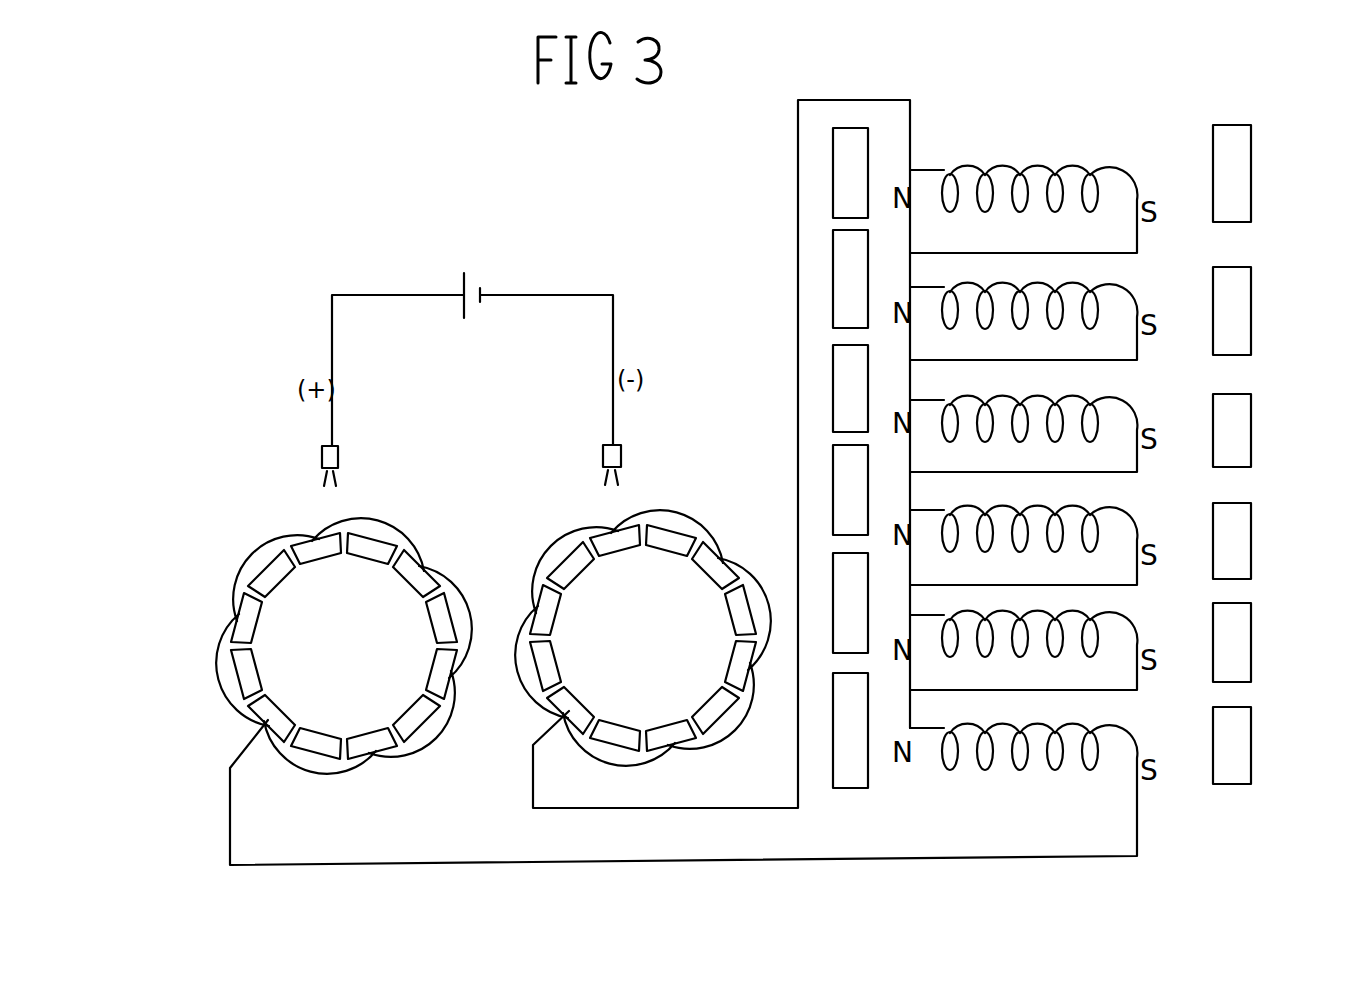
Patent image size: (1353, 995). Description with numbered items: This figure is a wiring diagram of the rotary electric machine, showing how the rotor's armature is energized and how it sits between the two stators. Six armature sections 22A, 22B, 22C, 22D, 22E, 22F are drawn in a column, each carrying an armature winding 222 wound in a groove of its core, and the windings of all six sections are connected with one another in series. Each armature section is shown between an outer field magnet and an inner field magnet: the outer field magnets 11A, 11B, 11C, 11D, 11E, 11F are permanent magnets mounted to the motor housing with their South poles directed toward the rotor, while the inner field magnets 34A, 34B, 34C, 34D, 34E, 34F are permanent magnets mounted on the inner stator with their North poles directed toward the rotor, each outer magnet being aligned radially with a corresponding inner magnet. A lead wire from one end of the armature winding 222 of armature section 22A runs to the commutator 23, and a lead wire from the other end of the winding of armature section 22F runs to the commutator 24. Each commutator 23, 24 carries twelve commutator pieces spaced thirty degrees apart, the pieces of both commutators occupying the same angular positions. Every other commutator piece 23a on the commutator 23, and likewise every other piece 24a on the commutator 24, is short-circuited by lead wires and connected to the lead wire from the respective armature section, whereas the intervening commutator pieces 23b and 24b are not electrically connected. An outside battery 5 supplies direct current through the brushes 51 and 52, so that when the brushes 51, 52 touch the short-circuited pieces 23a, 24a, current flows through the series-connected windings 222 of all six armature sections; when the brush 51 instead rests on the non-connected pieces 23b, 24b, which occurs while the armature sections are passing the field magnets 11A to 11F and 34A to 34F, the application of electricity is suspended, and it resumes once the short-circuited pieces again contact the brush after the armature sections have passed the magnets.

The outside battery 5 is at (478, 270).
The brush 51 is at (322, 456).
The brush 52 is at (621, 450).
The commutator 23 is at (336, 609).
The commutator piece 23a is at (303, 550).
The commutator piece 23b is at (373, 542).
The commutator 24 is at (598, 633).
The commutator piece 24a is at (607, 537).
The commutator piece 24b is at (672, 543).
The field magnet 11A is at (845, 765).
The field magnet 11B is at (842, 610).
The field magnet 11C is at (842, 470).
The field magnet 11D is at (842, 360).
The field magnet 11E is at (842, 247).
The field magnet 11F is at (843, 142).
The armature section 22A is at (1153, 799).
The armature section 22B is at (1107, 668).
The armature section 22C is at (1107, 563).
The armature section 22D is at (1107, 458).
The armature section 22E is at (1107, 338).
The armature section 22F is at (1107, 225).
The armature winding 222 is at (982, 210).
The field magnet 34A is at (1237, 780).
The field magnet 34B is at (1240, 670).
The field magnet 34C is at (1240, 568).
The field magnet 34D is at (1240, 455).
The field magnet 34E is at (1238, 340).
The field magnet 34F is at (1232, 128).